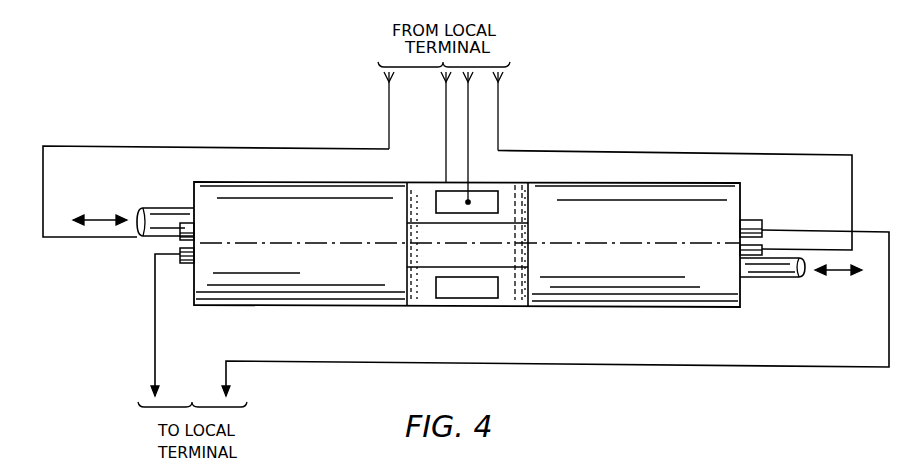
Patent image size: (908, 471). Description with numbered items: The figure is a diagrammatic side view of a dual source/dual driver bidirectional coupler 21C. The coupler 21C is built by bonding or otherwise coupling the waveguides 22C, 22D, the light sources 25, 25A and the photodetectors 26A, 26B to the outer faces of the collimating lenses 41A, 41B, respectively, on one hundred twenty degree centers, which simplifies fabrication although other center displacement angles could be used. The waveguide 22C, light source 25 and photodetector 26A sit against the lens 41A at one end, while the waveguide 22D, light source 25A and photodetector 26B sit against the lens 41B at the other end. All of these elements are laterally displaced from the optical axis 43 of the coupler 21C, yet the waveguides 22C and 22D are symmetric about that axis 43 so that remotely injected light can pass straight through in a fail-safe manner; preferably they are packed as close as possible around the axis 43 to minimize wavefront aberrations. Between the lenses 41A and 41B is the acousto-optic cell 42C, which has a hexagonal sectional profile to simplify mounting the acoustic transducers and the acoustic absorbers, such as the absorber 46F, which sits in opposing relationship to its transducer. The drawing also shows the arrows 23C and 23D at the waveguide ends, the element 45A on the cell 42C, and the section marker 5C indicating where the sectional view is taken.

The bidirectional coupler 21C is at (688, 136).
The waveguide 22C is at (160, 213).
The waveguide 22D is at (772, 279).
The bidirectional signal direction arrows 23C is at (100, 218).
The bidirectional signal direction arrows 23D is at (838, 275).
The light source 25 is at (190, 231).
The light source 25A is at (720, 247).
The photodetector 26A is at (190, 254).
The photodetector 26B is at (752, 219).
The collimating lens 41A is at (274, 190).
The collimating lens 41B is at (627, 192).
The acousto-optic cell 42C is at (413, 282).
The optical axis 43 is at (350, 241).
The optical transmitter 45A is at (487, 200).
The acoustic absorber 46F is at (487, 293).
The section line 5C is at (406, 168).